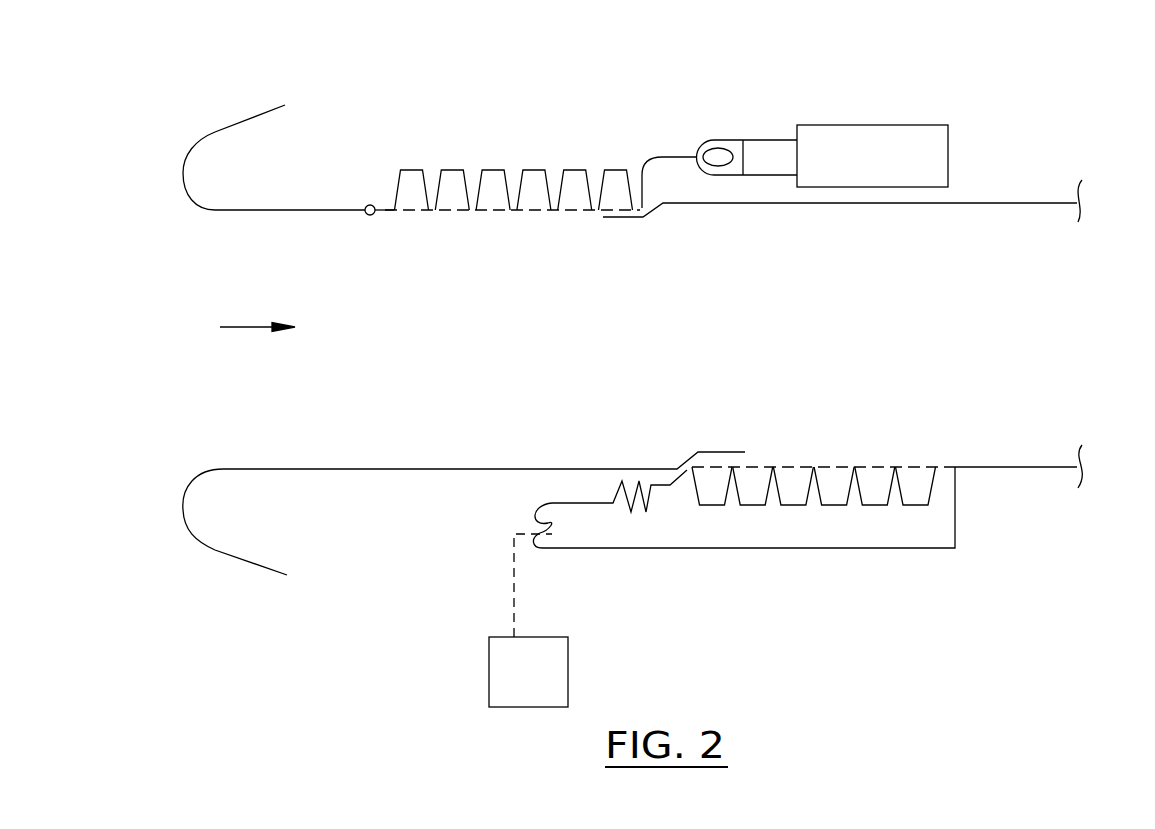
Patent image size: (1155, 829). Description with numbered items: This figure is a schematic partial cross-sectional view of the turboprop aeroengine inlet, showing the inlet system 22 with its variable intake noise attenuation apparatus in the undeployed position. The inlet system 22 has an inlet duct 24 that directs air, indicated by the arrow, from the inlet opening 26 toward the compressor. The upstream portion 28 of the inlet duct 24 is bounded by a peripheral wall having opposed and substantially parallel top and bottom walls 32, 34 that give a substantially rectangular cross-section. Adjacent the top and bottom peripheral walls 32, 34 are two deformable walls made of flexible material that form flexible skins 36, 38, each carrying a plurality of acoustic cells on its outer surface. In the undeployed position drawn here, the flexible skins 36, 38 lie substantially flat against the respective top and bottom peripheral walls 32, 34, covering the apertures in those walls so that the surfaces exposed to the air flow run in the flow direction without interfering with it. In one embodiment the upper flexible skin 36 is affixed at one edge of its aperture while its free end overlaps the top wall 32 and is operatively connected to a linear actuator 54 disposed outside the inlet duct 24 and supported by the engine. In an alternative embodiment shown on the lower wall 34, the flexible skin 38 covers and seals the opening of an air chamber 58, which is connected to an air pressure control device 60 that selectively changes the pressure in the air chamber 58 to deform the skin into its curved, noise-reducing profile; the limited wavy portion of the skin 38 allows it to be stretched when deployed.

The inlet system 22 is at (1012, 567).
The inlet duct 24 is at (908, 353).
The inlet opening 26 is at (218, 422).
The upstream portion 28 is at (1053, 259).
The top wall 32 is at (310, 210).
The bottom wall 34 is at (448, 470).
The flexible skin 36 is at (473, 212).
The flexible skin 38 is at (908, 467).
The linear actuator 54 is at (870, 123).
The air chamber 58 is at (786, 541).
The air pressure control device 60 is at (528, 620).